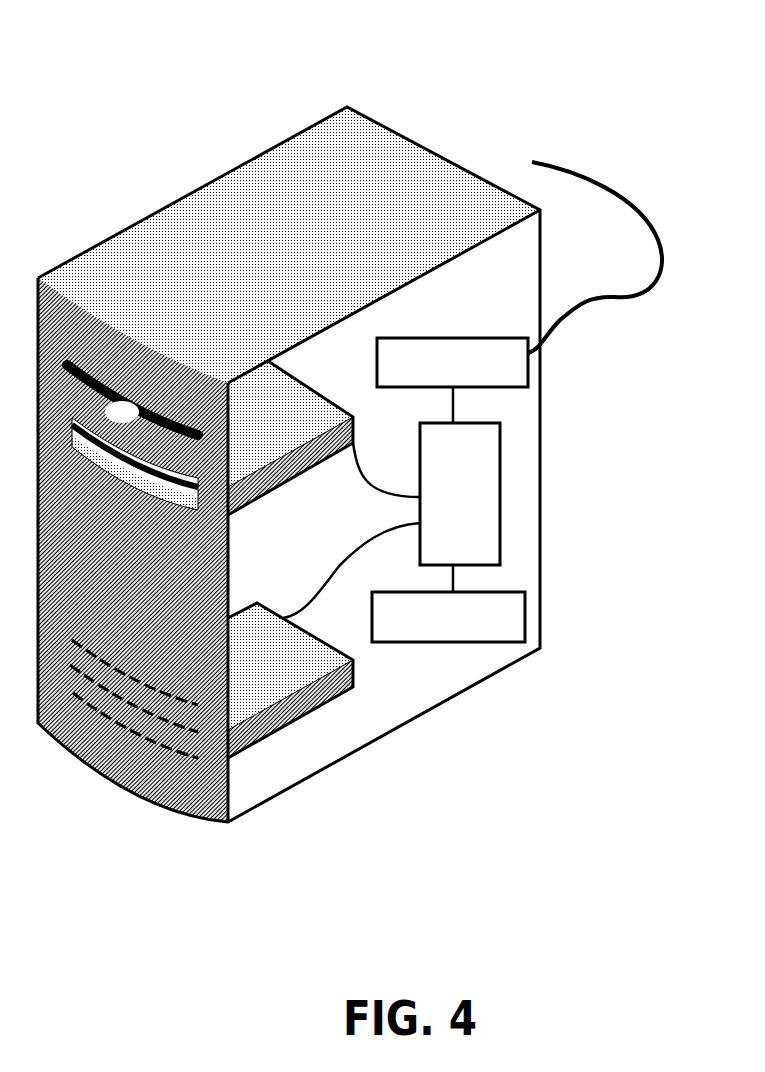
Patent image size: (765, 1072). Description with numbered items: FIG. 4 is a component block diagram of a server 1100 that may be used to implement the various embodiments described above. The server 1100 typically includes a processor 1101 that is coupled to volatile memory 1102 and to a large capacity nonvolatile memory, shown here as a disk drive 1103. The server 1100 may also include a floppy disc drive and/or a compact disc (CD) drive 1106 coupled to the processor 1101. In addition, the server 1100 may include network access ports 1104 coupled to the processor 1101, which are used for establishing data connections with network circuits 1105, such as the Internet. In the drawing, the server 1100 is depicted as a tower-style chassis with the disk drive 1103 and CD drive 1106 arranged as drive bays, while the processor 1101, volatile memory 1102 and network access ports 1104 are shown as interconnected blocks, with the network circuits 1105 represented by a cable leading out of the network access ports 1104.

The server 1100 is at (347, 107).
The processor 1101 is at (391, 520).
The volatile memory 1102 is at (448, 617).
The disk drive 1103 is at (355, 672).
The network access ports 1104 is at (452, 380).
The network circuits 1105 is at (612, 298).
The compact disc (CD) drive 1106 is at (305, 473).